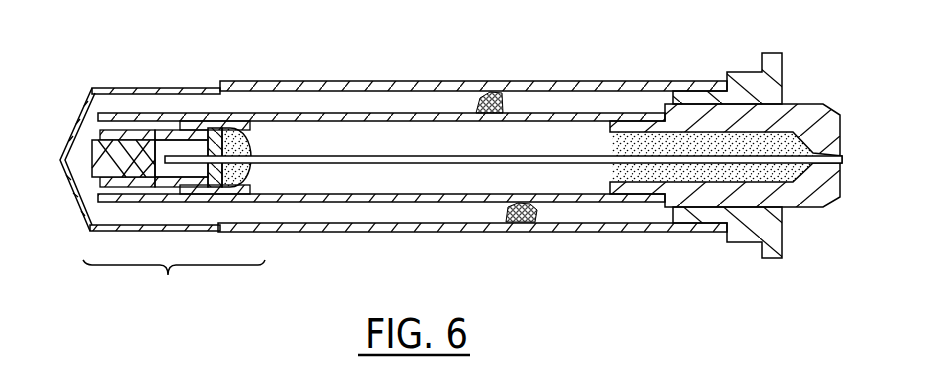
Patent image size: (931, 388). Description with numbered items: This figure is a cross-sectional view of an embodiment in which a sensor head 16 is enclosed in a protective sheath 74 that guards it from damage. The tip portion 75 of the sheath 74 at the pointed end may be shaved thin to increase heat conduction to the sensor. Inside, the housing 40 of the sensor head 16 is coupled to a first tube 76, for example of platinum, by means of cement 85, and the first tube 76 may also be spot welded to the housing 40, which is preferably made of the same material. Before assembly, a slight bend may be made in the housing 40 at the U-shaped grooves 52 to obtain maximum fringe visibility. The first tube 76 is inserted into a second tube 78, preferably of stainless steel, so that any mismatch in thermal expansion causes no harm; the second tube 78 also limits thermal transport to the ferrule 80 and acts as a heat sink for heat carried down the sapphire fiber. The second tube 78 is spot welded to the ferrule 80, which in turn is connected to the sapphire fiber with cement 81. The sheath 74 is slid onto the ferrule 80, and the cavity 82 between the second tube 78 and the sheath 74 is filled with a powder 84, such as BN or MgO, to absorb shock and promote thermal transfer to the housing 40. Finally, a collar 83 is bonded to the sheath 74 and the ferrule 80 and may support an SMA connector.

The sensor head 16 is at (174, 283).
The housing 40 is at (137, 140).
The U-shaped grooves 52 is at (162, 180).
The sheath 74 is at (382, 81).
The tip portion 75 is at (108, 88).
The first tube 76 is at (203, 122).
The second tube 78 is at (340, 203).
The ferrule 80 is at (798, 108).
The cement 81 is at (625, 140).
The cavity 82 is at (473, 213).
The collar 83 is at (740, 233).
The powder 84 is at (523, 226).
The cement 85 is at (250, 146).